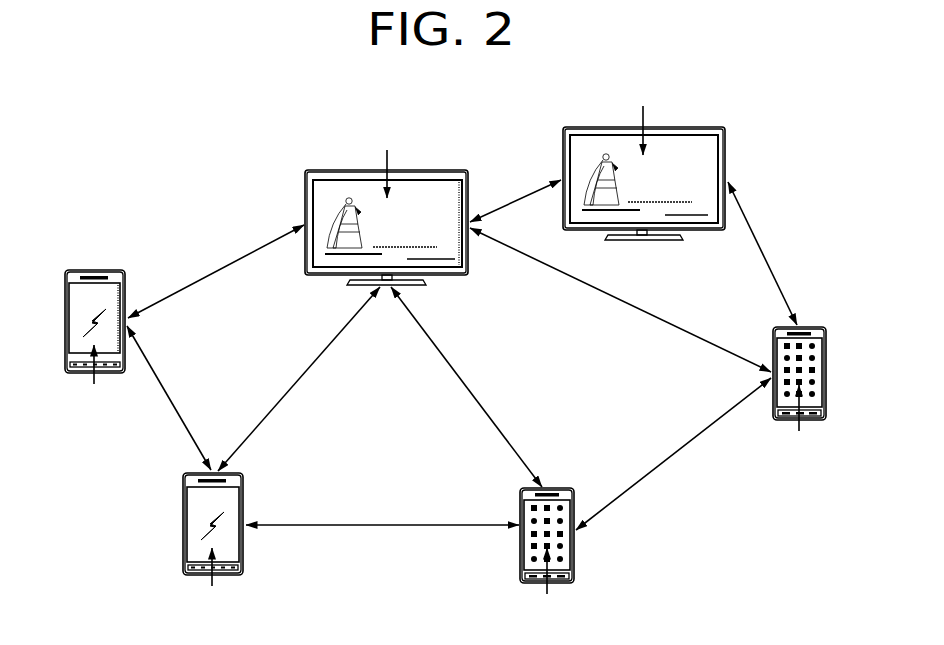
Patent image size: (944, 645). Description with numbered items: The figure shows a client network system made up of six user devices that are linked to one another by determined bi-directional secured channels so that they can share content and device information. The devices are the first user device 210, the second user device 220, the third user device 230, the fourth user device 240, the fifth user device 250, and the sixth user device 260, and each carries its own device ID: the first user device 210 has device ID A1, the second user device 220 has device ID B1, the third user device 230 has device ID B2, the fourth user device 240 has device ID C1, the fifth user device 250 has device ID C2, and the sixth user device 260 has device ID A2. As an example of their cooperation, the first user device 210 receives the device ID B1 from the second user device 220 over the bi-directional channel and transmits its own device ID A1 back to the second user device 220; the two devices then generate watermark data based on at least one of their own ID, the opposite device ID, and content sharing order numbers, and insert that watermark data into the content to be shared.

The user device 1 210 is at (471, 170).
The user device 2 220 is at (108, 270).
The user device 3 230 is at (229, 473).
The user device 4 240 is at (563, 488).
The user device 5 250 is at (815, 327).
The user device 6 260 is at (717, 127).